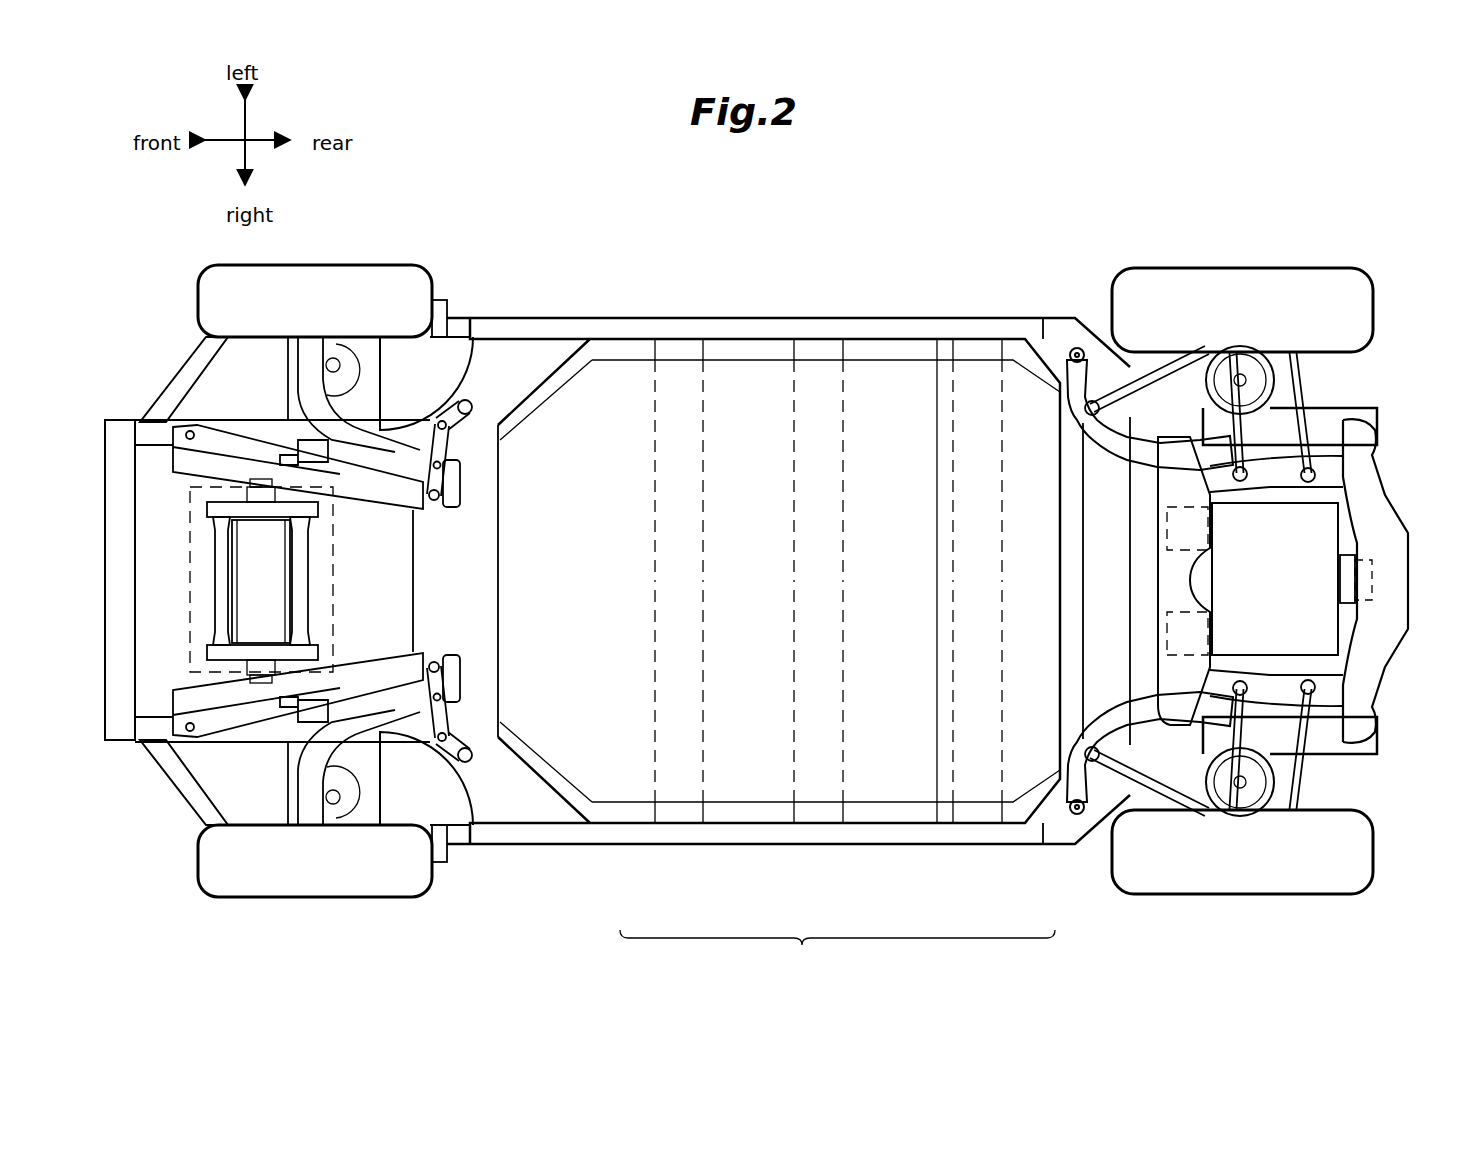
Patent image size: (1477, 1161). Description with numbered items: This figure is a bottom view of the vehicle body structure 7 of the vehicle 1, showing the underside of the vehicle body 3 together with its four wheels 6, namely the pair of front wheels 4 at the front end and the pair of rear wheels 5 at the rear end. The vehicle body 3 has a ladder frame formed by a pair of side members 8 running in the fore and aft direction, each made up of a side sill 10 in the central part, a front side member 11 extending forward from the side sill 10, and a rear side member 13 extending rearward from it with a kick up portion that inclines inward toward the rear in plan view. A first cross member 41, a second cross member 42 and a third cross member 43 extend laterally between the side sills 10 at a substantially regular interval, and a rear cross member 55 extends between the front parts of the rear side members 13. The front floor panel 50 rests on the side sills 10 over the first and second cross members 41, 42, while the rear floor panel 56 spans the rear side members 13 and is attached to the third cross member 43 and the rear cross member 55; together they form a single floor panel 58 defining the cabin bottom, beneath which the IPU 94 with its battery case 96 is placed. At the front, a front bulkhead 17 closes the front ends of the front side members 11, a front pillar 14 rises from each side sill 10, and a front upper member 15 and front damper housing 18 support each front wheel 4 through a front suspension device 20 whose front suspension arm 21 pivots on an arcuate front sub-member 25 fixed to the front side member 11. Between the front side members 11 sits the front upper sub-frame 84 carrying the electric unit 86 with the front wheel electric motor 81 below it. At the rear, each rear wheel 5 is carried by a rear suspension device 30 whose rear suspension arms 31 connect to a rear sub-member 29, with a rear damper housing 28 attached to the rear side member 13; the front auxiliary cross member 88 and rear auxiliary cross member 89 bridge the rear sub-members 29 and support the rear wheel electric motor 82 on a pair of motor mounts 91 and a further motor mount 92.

The vehicle 1 is at (1066, 228).
The vehicle body 3 is at (524, 304).
The front wheel 4 is at (306, 272).
The rear wheel 5 is at (1330, 270).
The wheels 6 is at (244, 261).
The vehicle body structure 7 is at (746, 303).
The side member 8 is at (551, 318).
The side sill 10 is at (886, 339).
The front side member 11 is at (168, 433).
The rear side member 13 is at (1327, 423).
The front pillar 14 is at (453, 325).
The front upper member 15 is at (183, 375).
The front bulkhead 17 is at (119, 458).
The front damper housing 18 is at (377, 342).
The front suspension device 20 is at (383, 374).
The front suspension arm 21 is at (295, 384).
The front sub-member 25 is at (363, 497).
The rear damper housing 28 is at (1203, 400).
The rear sub-member 29 is at (1330, 473).
The rear suspension device 30 is at (1258, 348).
The rear suspension arm 31 is at (1237, 352).
The first cross member 41 is at (682, 360).
The second cross member 42 is at (812, 360).
The third cross member 43 is at (972, 360).
The front floor panel 50 is at (627, 808).
The rear cross member 55 is at (1100, 705).
The rear floor panel 56 is at (1020, 812).
The floor panel 58 is at (837, 953).
The front wheel electric motor 81 is at (188, 587).
The rear wheel electric motor 82 is at (1347, 634).
The front upper sub-frame 84 is at (218, 560).
The electric unit 86 is at (278, 595).
The front auxiliary cross member 88 is at (1195, 575).
The rear auxiliary cross member 89 is at (1403, 592).
The motor mount 91 is at (1170, 528).
The motor mount 92 is at (1352, 575).
The IPU 94 is at (626, 360).
The battery case 96 is at (755, 805).